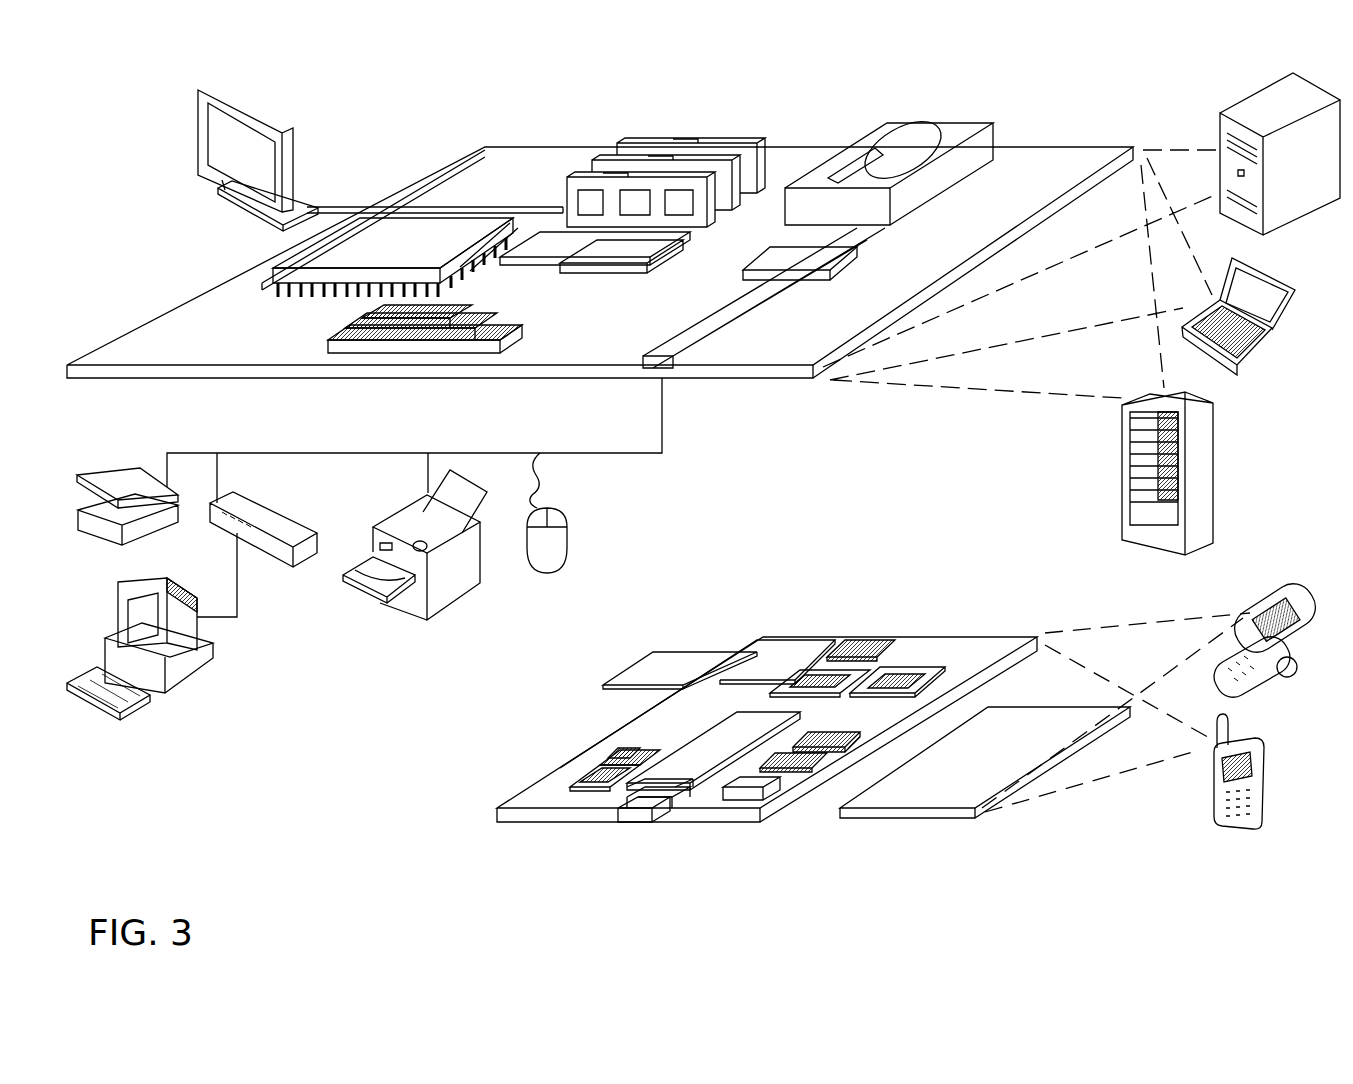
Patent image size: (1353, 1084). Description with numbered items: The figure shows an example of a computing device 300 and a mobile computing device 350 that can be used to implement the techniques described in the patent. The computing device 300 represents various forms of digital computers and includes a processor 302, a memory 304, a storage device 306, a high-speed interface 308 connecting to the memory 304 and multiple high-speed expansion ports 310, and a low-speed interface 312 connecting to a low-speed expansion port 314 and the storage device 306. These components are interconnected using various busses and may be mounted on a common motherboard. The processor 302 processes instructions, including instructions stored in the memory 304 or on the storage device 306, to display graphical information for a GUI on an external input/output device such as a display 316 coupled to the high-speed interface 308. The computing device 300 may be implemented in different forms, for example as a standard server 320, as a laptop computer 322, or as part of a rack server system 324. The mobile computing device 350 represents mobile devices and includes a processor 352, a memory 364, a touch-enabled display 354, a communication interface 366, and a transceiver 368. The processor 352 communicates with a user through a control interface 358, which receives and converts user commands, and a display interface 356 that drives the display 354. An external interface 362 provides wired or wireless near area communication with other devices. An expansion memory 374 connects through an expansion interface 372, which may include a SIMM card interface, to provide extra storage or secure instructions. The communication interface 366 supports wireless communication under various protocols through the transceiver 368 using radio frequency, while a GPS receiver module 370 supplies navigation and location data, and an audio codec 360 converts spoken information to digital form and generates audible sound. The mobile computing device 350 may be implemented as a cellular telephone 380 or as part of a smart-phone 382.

The computing device 300 is at (407, 104).
The processor 302 is at (242, 277).
The memory 304 is at (617, 138).
The storage device 306 is at (876, 120).
The high-speed interface 308 is at (569, 237).
The high-speed expansion ports 310 is at (347, 332).
The low-speed interface 312 is at (772, 253).
The low-speed expansion port 314 is at (700, 378).
The display 316 is at (200, 92).
The standard server 320 is at (1220, 134).
The laptop computer 322 is at (1277, 284).
The rack server system 324 is at (1120, 497).
The mobile computing device 350 is at (467, 822).
The processor 352 is at (687, 780).
The touch-enabled display 354 is at (943, 793).
The display interface 356 is at (763, 812).
The control interface 358 is at (806, 792).
The audio codec 360 is at (823, 778).
The external interface 362 is at (653, 809).
The memory 364 is at (594, 772).
The communication interface 366 is at (810, 672).
The transceiver 368 is at (898, 676).
The GPS receiver module 370 is at (870, 638).
The expansion interface 372 is at (734, 650).
The expansion memory 374 is at (676, 659).
The cellular telephone 380 is at (1268, 587).
The smart-phone 382 is at (1208, 784).